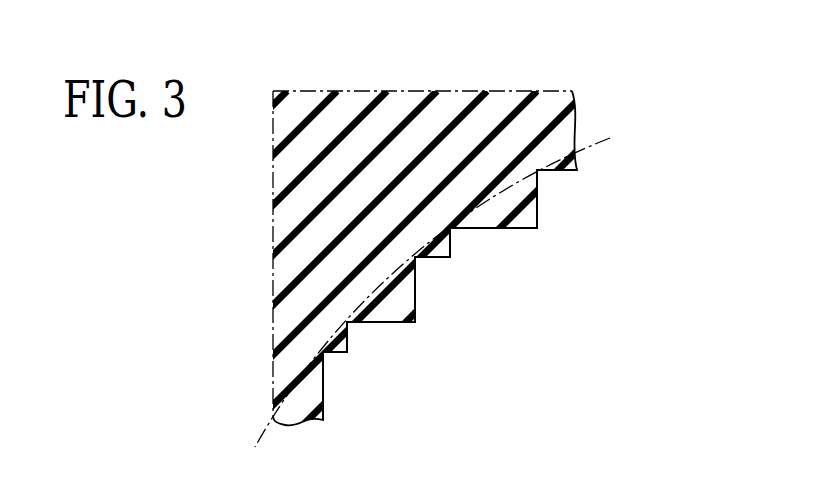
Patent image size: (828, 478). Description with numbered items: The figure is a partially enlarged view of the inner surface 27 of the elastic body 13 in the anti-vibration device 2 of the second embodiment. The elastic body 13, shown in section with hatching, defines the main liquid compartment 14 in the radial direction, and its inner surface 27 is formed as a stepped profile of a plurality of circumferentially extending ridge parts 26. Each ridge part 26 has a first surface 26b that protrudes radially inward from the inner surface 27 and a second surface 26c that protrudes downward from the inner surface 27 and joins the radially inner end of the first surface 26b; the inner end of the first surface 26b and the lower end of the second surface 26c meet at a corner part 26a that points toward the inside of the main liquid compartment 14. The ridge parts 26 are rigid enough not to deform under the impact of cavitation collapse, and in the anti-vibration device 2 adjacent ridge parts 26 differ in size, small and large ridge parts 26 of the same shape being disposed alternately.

The elastic body 13 is at (505, 107).
The anti-vibration device 2 is at (608, 177).
The ridge part 26 is at (523, 185).
The corner part 26a is at (537, 229).
The first surface 26b is at (435, 257).
The second surface 26c is at (455, 238).
The inner surface 27 is at (355, 333).
The main liquid compartment 14 is at (655, 382).